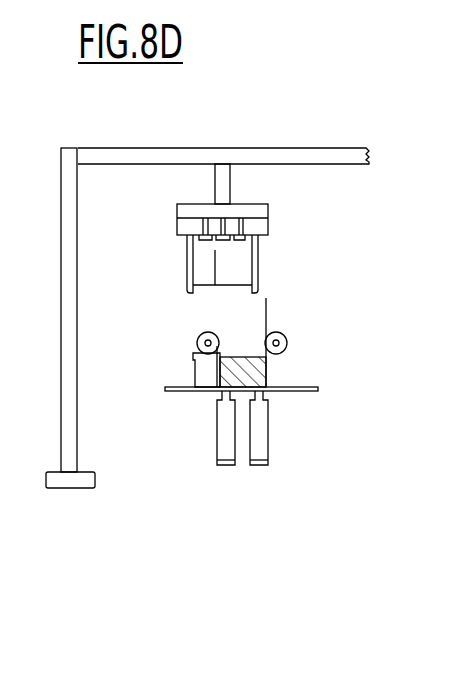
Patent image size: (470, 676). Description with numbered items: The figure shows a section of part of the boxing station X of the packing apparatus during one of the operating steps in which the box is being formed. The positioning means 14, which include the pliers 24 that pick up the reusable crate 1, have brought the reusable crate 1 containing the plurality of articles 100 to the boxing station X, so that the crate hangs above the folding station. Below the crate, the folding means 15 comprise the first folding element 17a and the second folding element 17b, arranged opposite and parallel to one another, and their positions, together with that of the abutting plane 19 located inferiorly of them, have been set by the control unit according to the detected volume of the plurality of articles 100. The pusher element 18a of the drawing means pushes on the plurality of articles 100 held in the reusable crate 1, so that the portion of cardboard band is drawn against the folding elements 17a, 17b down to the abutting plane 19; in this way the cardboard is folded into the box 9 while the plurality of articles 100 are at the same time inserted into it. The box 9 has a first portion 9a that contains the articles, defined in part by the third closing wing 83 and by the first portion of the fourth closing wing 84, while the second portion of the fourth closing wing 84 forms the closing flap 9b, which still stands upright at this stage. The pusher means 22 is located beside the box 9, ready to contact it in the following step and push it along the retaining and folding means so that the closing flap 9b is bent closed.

The reusable crate 1 is at (228, 255).
The positioning means 14 is at (231, 188).
The pusher element 18a is at (201, 230).
The pliers 24 is at (186, 257).
The folding means 15 is at (156, 331).
The first folding element 17a is at (197, 339).
The second folding element 17b is at (288, 341).
The third closing wing 83 is at (216, 367).
The pusher means 22 is at (191, 373).
The fourth closing wing 84 is at (364, 323).
The closing flap 9b is at (267, 320).
The box 9 is at (316, 411).
The first portion 9a is at (268, 370).
The abutting plane 19 is at (180, 389).
The plurality of articles 100 is at (219, 399).
The boxing station X is at (389, 200).